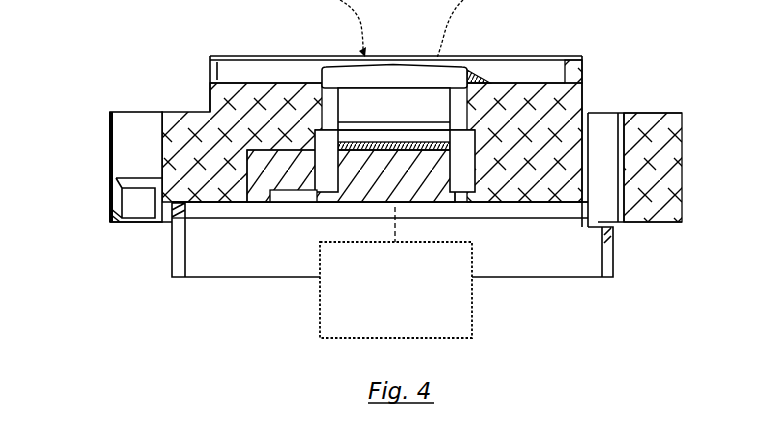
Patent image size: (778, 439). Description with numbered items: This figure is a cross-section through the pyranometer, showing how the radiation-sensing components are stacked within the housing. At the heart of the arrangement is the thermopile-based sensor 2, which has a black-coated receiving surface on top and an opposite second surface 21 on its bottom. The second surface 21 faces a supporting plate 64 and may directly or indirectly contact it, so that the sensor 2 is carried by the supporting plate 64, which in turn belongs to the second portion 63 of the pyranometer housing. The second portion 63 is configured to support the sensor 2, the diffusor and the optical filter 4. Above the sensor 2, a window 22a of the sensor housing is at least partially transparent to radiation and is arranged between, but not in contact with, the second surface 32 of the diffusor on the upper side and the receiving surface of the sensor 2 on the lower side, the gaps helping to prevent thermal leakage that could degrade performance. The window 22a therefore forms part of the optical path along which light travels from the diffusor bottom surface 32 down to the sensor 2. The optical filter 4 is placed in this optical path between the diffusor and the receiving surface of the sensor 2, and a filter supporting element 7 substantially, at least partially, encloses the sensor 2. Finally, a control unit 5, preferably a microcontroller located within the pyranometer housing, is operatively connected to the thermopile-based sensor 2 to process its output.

The thermopile-based sensor 2 is at (463, 153).
The optical filter 4 is at (487, 147).
The control unit 5 is at (406, 305).
The filter supporting element 7 is at (582, 57).
The second surface 21 is at (350, 212).
The window 22a is at (380, 150).
The second surface of the diffusor 32 is at (388, 100).
The second portion 63 is at (167, 120).
The supporting plate 64 is at (198, 218).